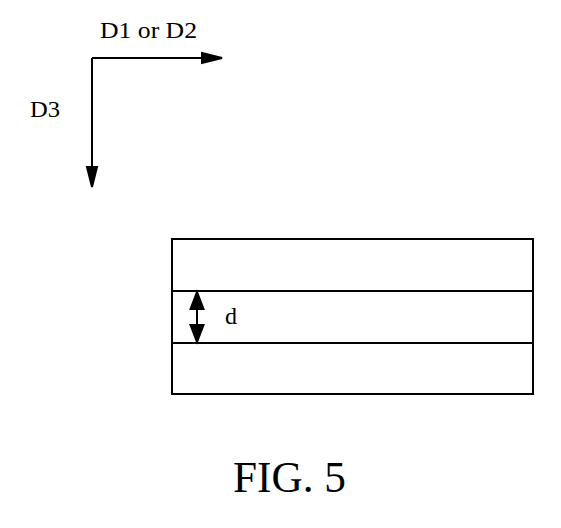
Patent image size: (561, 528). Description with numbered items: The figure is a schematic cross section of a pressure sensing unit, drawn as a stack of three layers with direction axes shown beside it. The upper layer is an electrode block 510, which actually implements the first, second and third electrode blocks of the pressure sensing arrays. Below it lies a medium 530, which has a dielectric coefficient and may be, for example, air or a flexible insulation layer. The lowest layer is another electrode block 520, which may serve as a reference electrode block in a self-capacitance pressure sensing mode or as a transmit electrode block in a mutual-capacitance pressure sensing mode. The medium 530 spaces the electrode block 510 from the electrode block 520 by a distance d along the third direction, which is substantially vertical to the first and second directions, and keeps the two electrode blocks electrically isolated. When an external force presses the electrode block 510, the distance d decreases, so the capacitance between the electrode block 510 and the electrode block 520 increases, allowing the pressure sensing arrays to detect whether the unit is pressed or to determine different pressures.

The electrode block 510 is at (372, 275).
The medium 530 is at (372, 328).
The electrode block 520 is at (372, 382).